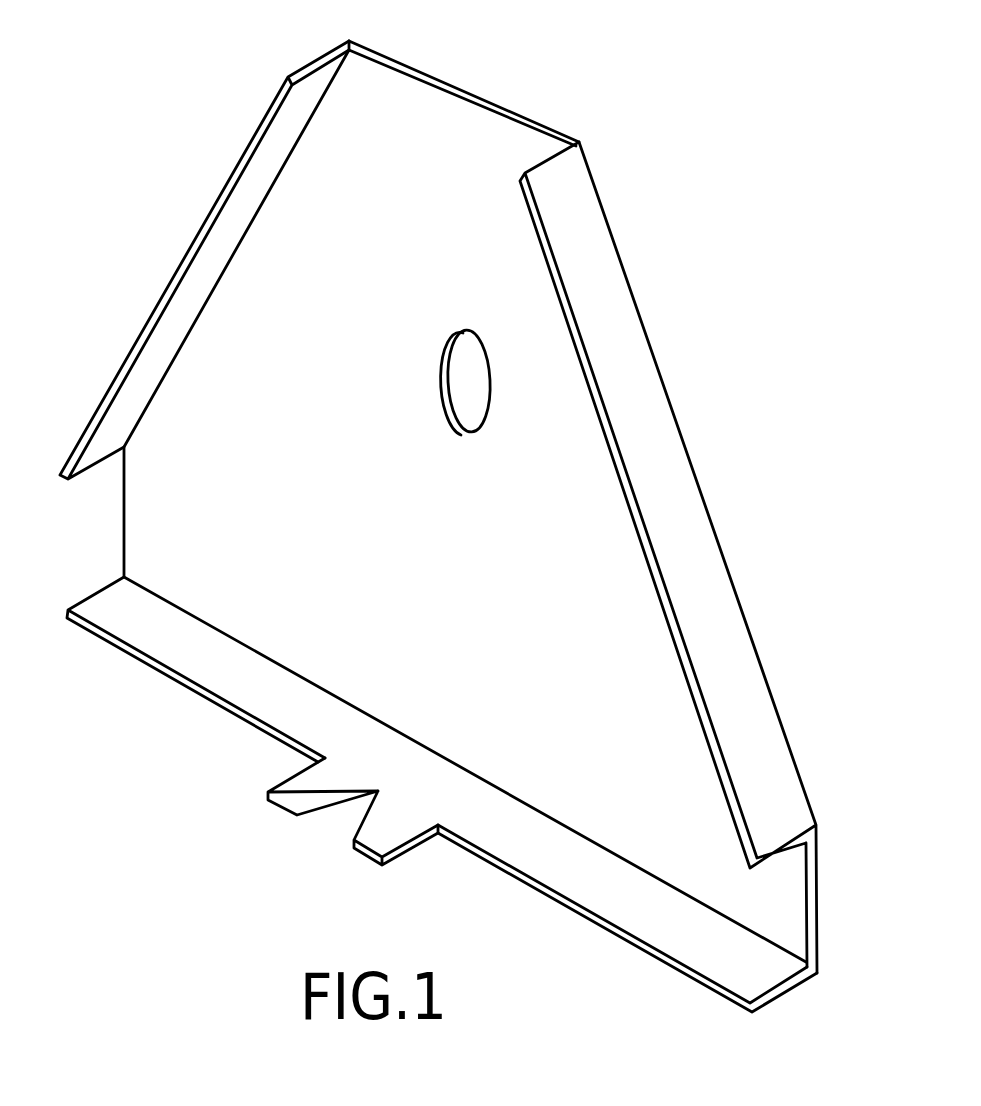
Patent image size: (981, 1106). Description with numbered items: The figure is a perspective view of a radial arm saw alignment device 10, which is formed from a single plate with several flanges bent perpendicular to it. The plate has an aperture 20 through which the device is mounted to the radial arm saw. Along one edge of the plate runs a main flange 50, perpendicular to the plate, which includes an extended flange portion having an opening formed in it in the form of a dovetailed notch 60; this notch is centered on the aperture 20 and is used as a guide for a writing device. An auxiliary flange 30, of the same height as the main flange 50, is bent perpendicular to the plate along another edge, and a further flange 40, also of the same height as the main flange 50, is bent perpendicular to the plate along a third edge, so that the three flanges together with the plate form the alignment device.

The radial arm saw alignment device 10 is at (423, 117).
The aperture 20 is at (462, 368).
The auxiliary flange 30 is at (687, 518).
The flange 40 is at (193, 247).
The main flange 50 is at (233, 683).
The dovetailed notch 60 is at (342, 820).